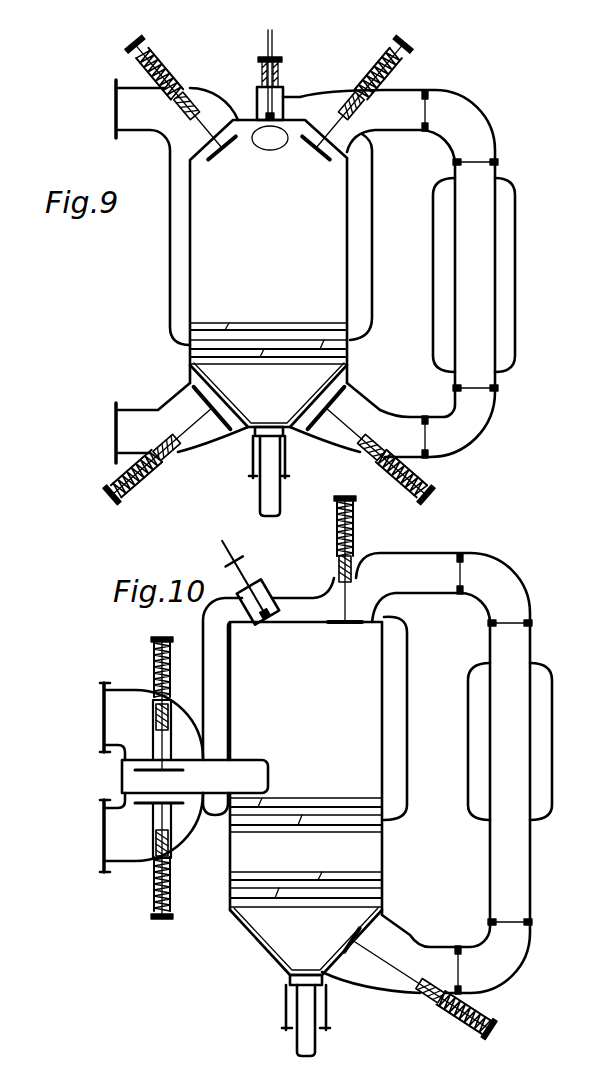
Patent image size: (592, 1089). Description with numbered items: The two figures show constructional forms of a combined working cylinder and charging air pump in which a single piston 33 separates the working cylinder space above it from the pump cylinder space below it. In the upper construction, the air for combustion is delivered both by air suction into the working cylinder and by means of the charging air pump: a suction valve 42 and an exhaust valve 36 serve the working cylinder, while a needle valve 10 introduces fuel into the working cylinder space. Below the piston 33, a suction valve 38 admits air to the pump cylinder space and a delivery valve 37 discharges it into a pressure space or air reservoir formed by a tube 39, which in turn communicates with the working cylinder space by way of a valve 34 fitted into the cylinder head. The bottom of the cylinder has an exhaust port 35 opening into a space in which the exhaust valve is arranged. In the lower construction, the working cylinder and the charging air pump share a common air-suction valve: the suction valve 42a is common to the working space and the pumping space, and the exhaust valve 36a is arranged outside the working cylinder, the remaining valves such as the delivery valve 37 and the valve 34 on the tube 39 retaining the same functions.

In FIG. 9, the needle valve 10 is at (281, 86).
In FIG. 10, the needle valve 10 is at (268, 596).
In FIG. 9, the piston 33 is at (252, 348).
In FIG. 10, the piston 33 is at (307, 817).
In FIG. 9, the valve 34 is at (328, 152).
In FIG. 10, the valve 34 is at (332, 628).
In FIG. 10, the exhaust port 35 is at (248, 774).
In FIG. 9, the exhaust valve 36 is at (213, 153).
In FIG. 10, the exhaust valve 36a is at (147, 805).
In FIG. 9, the delivery valve 37 is at (342, 422).
In FIG. 10, the delivery valve 37 is at (383, 963).
In FIG. 9, the suction valve 38 is at (197, 422).
In FIG. 9, the tube 39 is at (485, 302).
In FIG. 10, the tube 39 is at (508, 743).
In FIG. 9, the suction valve 42 is at (265, 149).
In FIG. 10, the suction valve 42a is at (170, 768).